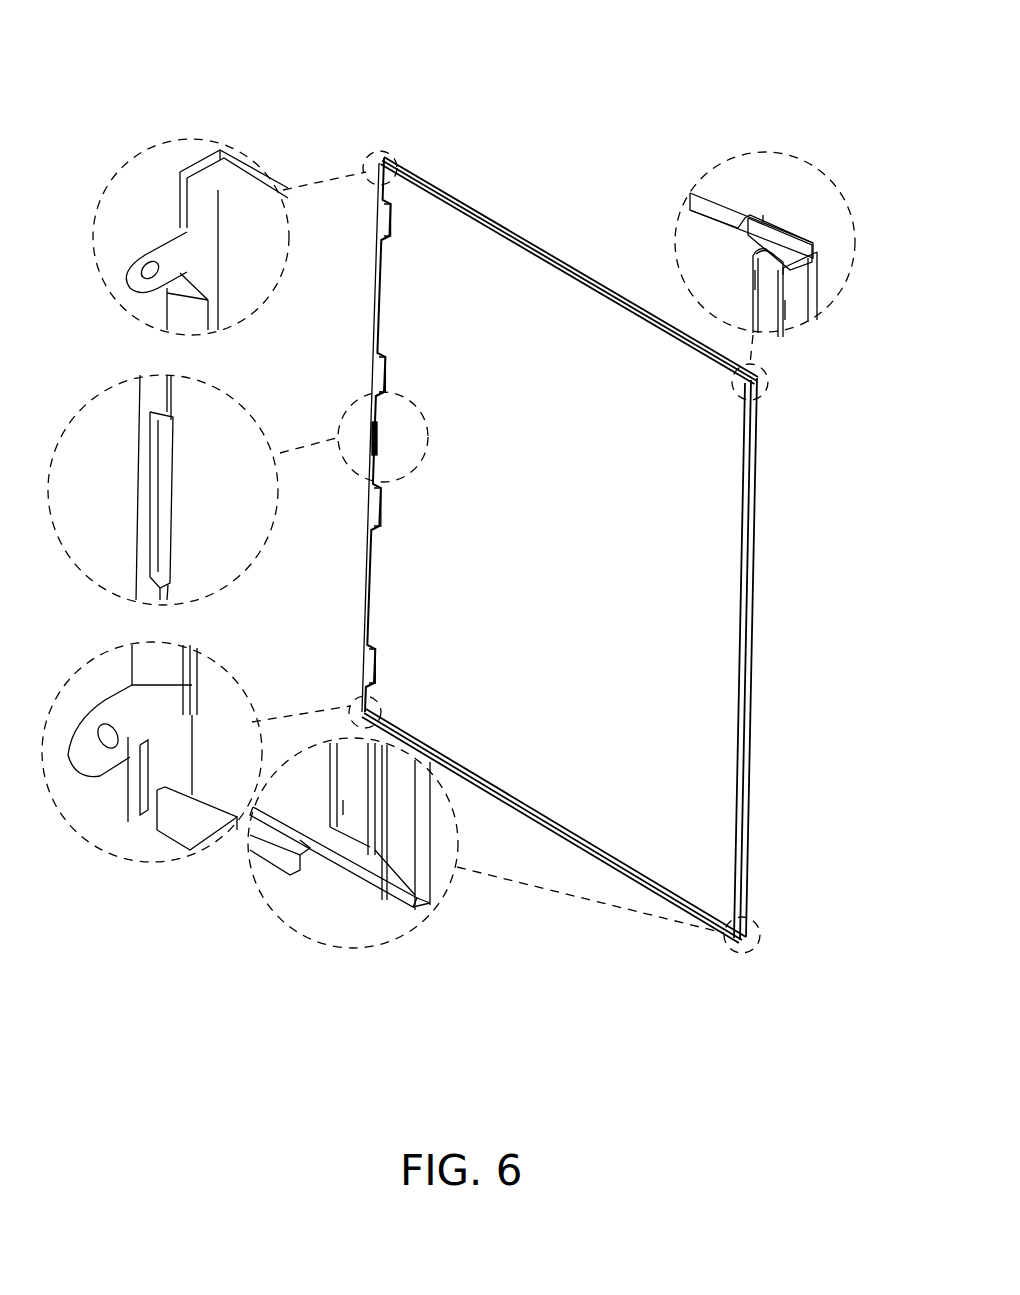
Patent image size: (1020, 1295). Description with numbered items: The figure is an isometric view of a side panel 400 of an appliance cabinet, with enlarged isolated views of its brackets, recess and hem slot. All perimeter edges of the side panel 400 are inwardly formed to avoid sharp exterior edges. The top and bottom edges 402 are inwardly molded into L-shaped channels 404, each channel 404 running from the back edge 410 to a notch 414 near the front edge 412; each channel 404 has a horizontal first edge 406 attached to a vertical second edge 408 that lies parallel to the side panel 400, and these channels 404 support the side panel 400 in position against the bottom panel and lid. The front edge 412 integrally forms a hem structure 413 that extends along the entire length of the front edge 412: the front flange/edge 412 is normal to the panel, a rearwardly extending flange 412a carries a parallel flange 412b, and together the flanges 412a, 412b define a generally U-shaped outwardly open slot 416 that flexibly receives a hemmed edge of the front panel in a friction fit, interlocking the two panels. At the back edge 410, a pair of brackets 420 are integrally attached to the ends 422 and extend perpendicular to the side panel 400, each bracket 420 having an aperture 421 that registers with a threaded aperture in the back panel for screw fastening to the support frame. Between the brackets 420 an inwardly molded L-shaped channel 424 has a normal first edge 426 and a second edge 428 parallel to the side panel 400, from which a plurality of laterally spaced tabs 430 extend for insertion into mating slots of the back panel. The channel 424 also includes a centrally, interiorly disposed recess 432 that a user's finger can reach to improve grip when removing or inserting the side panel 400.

The side panel 400 is at (465, 105).
The top and bottom edges 402 is at (273, 847).
The L-shaped channel 404 is at (588, 290).
The horizontal first edge 406 is at (318, 852).
The vertical second edge 408 is at (282, 842).
The back edge 410 is at (379, 283).
The front edge 412 is at (800, 300).
The rearwardly extending flange 412a is at (763, 248).
The parallel flange 412b is at (765, 275).
The hem structure 413 is at (788, 315).
The notch 414 is at (367, 888).
The U-shaped outwardly open slot 416 is at (785, 272).
The bracket 420 is at (170, 243).
The aperture 421 is at (145, 272).
The ends of the back edge 422 is at (208, 190).
The L-shaped channel 424 is at (388, 303).
The normal first edge 426 is at (207, 267).
The second edge 428 is at (193, 320).
The tab 430 is at (393, 228).
The recess 432 is at (160, 485).